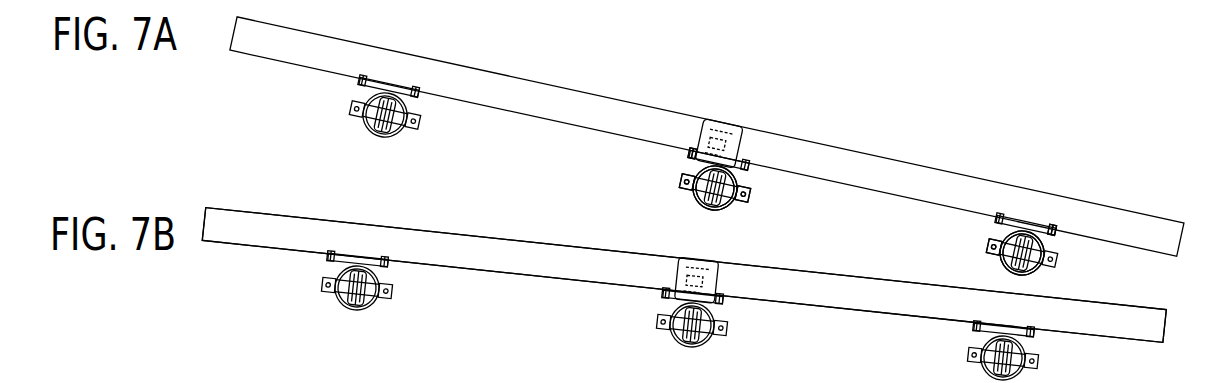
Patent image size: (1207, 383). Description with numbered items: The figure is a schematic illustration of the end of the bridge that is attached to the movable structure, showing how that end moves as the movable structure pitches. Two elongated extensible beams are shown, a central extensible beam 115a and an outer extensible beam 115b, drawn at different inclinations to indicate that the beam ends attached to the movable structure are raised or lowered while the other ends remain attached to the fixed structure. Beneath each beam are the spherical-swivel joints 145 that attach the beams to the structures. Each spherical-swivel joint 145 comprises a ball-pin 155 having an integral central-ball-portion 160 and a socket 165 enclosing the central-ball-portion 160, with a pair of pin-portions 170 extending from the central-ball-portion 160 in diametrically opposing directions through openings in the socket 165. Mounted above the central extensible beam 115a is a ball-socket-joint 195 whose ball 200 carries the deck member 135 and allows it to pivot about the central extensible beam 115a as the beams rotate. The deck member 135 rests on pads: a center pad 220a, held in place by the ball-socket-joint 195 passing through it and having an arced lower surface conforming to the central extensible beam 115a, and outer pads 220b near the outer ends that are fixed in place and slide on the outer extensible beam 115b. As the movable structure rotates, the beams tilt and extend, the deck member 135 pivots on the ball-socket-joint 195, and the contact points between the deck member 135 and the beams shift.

In FIG. 7A, the deck member 135 is at (1136, 211).
In FIG. 7A, the ball-socket-joint 195 is at (740, 115).
In FIG. 7A, the center pad 220a is at (687, 150).
In FIG. 7A, the outer pad 220b is at (1048, 231).
In FIG. 7A, the ball-pin 155 is at (666, 181).
In FIG. 7A, the pin-portion 170 is at (746, 188).
In FIG. 7A, the spherical-swivel joint 145 is at (686, 208).
In FIG. 7A, the central extensible beam 115a is at (735, 206).
In FIG. 7A, the outer extensible beam 115b is at (1037, 269).
In FIG. 7A, the socket 165 is at (1010, 233).
In FIG. 7A, the central-ball-portion 160 is at (1001, 268).
In FIG. 7B, the ball 200 is at (722, 381).